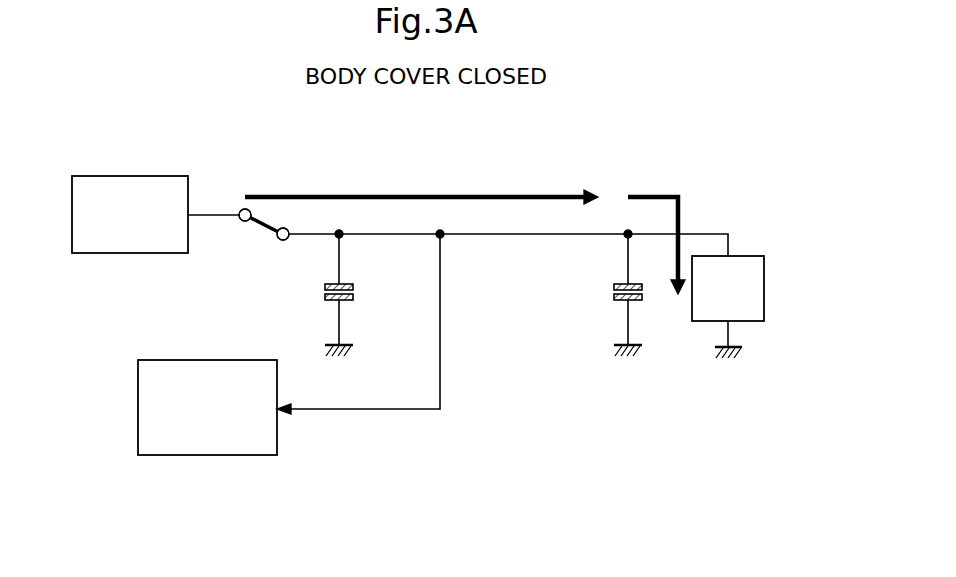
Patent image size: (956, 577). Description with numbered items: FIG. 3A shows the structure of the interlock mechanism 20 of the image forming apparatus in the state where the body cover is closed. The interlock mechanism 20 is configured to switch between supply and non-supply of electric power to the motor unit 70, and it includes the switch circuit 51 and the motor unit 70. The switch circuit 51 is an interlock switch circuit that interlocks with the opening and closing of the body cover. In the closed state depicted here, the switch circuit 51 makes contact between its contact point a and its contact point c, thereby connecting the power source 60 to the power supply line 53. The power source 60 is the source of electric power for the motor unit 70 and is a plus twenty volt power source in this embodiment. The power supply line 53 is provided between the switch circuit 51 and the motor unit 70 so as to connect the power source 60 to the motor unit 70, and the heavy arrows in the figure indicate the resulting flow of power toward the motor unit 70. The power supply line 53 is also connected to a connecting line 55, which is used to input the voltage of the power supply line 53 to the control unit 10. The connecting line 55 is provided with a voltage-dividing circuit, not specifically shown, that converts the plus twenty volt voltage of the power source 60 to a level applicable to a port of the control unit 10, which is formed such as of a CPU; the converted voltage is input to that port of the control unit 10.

The power source 60 is at (145, 176).
The switch circuit 51 is at (238, 229).
The contact point a is at (243, 209).
The contact point c is at (285, 241).
The power supply line 53 is at (492, 236).
The connecting line 55 is at (441, 376).
The control unit 10 is at (227, 360).
The motor unit 70 is at (745, 256).
The interlock mechanism 20 is at (607, 144).